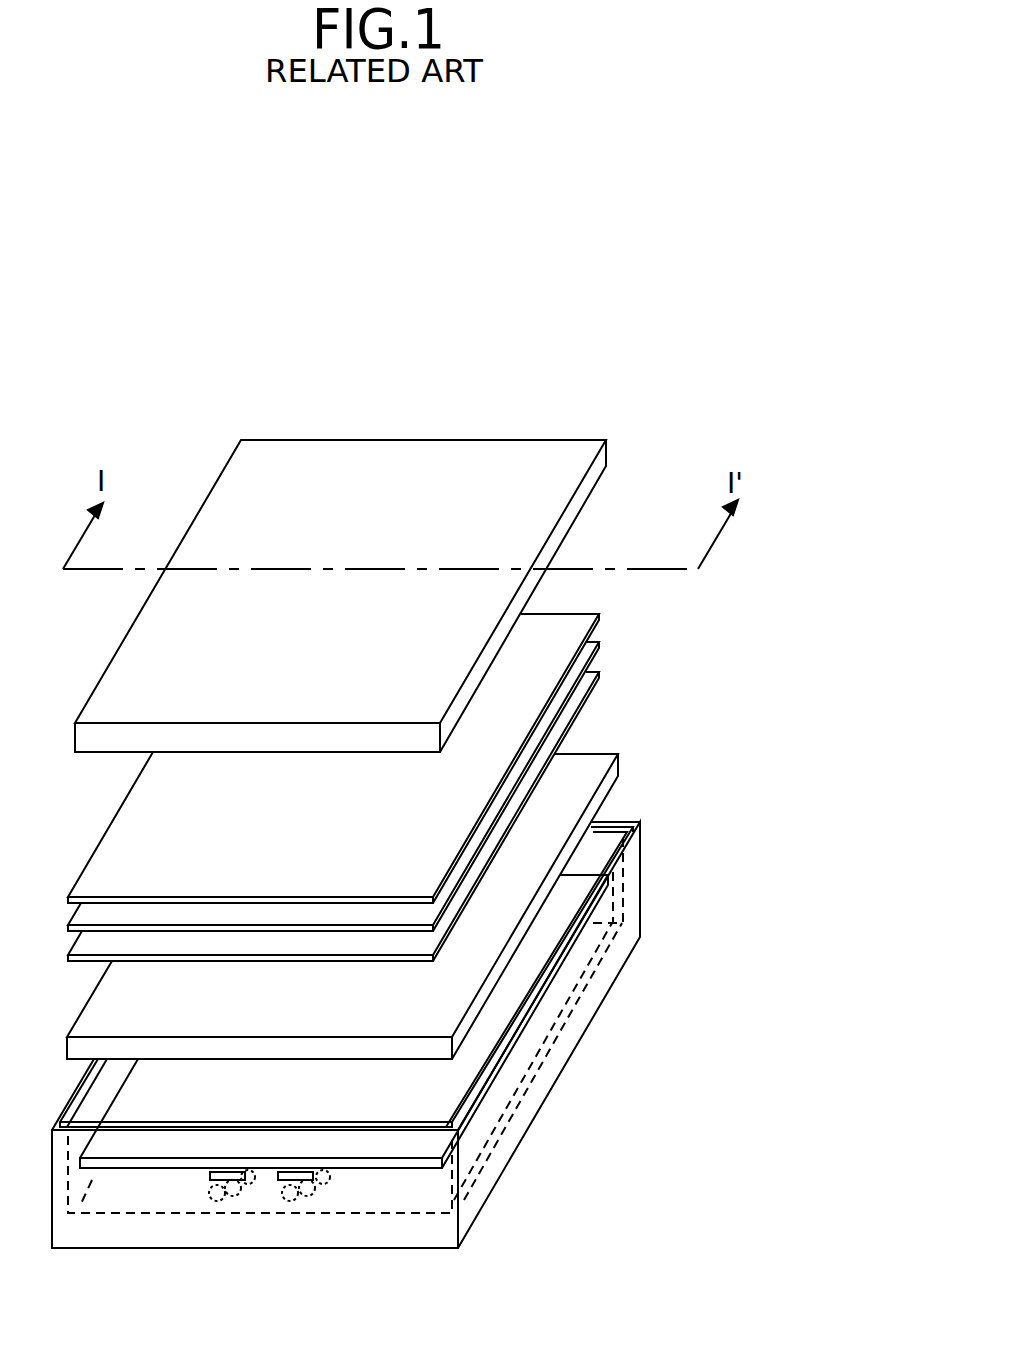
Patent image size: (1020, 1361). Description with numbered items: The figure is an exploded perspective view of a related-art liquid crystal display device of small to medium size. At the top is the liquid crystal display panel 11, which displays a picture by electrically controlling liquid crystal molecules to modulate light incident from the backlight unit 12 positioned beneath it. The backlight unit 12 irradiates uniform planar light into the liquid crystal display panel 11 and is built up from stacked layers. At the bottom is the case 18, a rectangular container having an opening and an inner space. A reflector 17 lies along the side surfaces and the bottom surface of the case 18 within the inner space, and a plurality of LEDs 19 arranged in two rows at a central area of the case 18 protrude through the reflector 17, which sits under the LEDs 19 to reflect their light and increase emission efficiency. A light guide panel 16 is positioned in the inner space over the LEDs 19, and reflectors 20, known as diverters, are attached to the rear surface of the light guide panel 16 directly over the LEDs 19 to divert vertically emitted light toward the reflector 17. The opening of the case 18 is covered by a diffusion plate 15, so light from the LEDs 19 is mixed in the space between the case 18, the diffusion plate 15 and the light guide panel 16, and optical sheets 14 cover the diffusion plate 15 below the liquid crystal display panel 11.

The liquid crystal display panel 11 is at (597, 468).
The backlight unit 12 is at (753, 613).
The optical sheets 14 is at (613, 608).
The diffusion plate 15 is at (618, 760).
The light guide panel 16 is at (405, 1163).
The reflector 17 is at (627, 828).
The case 18 is at (580, 1017).
The LEDs 19 is at (313, 1197).
The reflectors 20 is at (307, 1172).